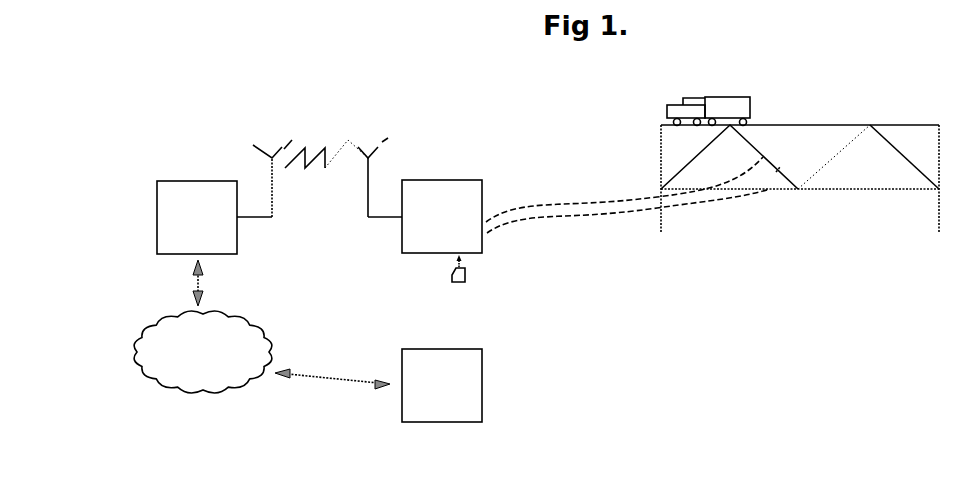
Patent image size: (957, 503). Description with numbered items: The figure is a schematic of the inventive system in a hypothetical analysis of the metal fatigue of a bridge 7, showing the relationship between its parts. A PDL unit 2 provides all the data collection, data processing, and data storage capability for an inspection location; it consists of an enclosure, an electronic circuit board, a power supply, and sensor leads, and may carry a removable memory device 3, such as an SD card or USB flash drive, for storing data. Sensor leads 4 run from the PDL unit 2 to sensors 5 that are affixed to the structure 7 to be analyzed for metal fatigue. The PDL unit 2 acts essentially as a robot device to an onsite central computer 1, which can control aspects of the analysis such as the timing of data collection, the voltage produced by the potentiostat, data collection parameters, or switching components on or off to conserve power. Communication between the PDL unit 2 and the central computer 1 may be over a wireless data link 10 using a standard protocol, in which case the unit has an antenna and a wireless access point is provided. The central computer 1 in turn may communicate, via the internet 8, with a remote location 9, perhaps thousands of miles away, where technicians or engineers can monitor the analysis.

The onsite central computer 1 is at (168, 240).
The PDL unit 2 is at (430, 243).
The removable memory device 3 is at (467, 276).
The sensor leads 4 is at (612, 203).
The sensors 5 is at (765, 161).
The bridge 7 is at (885, 190).
The internet 8 is at (160, 365).
The remote location 9 is at (460, 386).
The wireless data link 10 is at (363, 132).